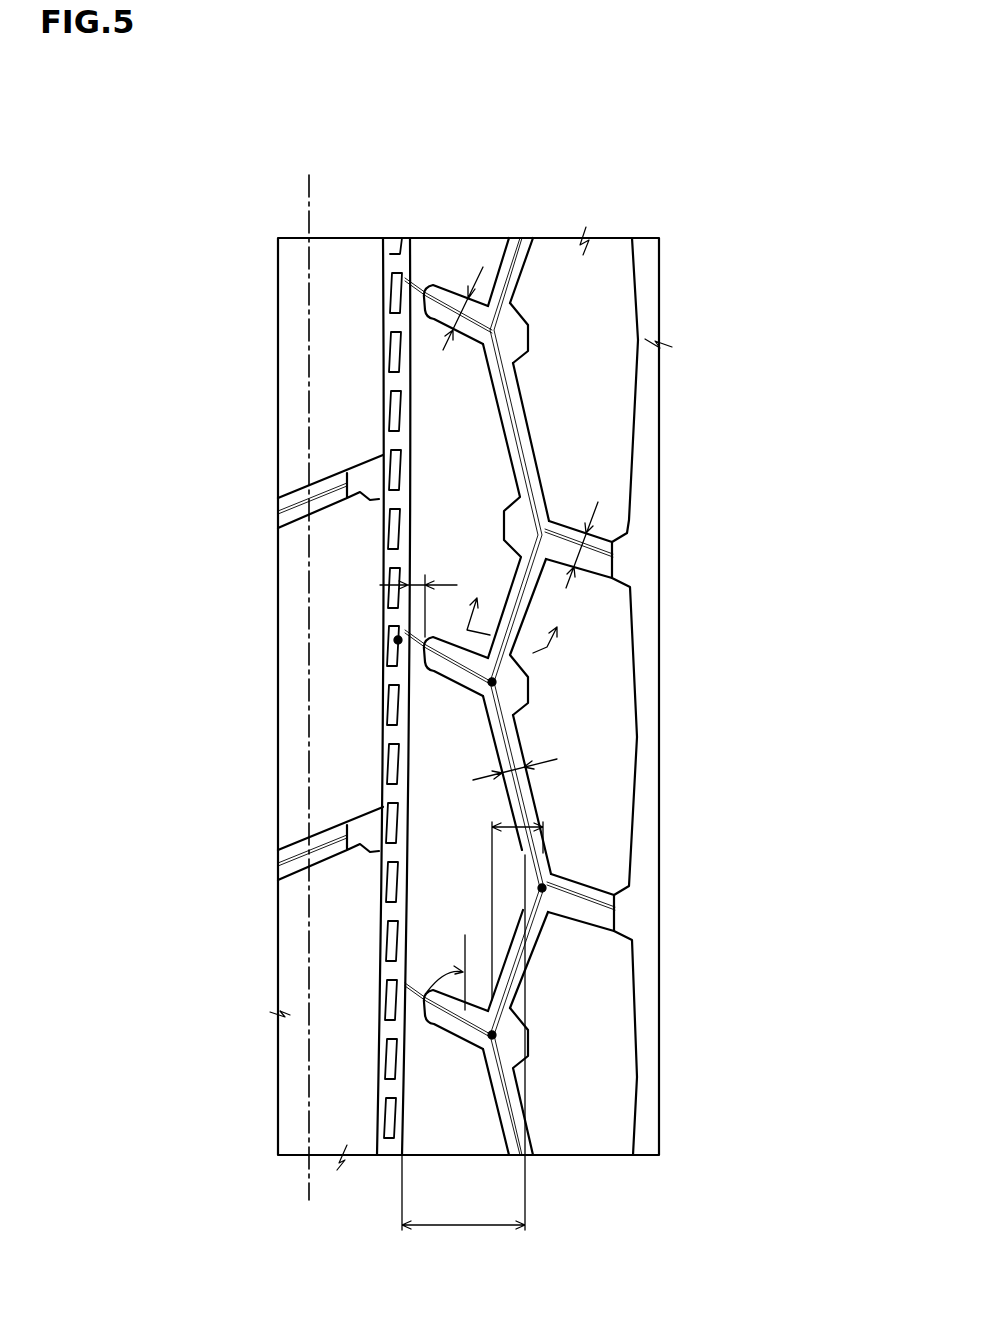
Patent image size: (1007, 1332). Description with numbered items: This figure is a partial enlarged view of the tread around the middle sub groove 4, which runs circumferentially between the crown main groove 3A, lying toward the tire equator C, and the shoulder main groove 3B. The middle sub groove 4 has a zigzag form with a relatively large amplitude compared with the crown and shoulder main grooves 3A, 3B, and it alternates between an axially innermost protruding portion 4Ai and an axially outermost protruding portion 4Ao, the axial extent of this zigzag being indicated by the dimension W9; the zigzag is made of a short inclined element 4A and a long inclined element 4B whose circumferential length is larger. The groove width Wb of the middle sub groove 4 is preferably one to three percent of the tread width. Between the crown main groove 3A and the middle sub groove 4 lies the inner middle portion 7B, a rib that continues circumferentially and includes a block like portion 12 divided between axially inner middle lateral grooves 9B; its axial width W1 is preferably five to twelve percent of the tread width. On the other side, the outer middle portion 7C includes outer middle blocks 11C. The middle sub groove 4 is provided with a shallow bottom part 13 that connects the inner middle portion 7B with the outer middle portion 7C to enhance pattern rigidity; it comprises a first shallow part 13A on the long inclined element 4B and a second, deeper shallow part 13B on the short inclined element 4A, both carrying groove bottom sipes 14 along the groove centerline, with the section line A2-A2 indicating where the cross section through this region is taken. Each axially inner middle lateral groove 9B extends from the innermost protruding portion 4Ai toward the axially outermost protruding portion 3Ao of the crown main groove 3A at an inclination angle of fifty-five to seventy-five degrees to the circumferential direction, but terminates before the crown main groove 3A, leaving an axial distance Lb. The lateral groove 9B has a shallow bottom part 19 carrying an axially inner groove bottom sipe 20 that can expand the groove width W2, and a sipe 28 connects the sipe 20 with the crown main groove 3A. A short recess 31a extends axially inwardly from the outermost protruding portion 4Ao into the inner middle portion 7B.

The tire equator C is at (309, 672).
The crown main groove 3A is at (391, 238).
The shoulder main groove 3B is at (649, 241).
The middle sub groove 4 is at (520, 239).
The short inclined element 4A is at (545, 956).
The long inclined element 4B is at (546, 779).
The axially innermost protruding portion 4Ai is at (492, 682).
The axially outermost protruding portion 4Ao is at (542, 888).
The inner middle portion 7B is at (447, 241).
The outer middle portion 7C is at (562, 244).
The axially inner middle lateral groove 9B is at (437, 686).
The outer middle block 11C is at (617, 367).
The block like portion 12 is at (463, 474).
The shallow bottom part 13 is at (172, 330).
The first shallow part 13A is at (503, 397).
The second shallow part 13B is at (483, 333).
The groove bottom sipe 14 is at (510, 312).
The shallow bottom part 19 is at (453, 1027).
The axially inner groove bottom sipe 20 is at (442, 1015).
The sipe 28 is at (420, 1000).
The recess 31a is at (310, 517).
The axially outermost protruding portion 3Ao is at (398, 640).
The groove width W2 is at (422, 283).
The groove width Wb is at (545, 762).
The zigzag amplitude W9 is at (543, 826).
The axial width W1 is at (464, 1061).
The axial distance Lb is at (425, 575).
The line A2- A2 is at (480, 615).